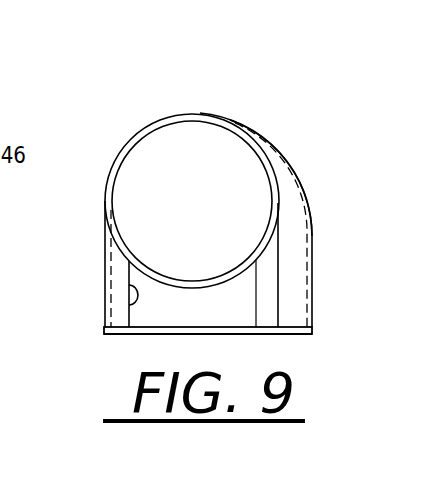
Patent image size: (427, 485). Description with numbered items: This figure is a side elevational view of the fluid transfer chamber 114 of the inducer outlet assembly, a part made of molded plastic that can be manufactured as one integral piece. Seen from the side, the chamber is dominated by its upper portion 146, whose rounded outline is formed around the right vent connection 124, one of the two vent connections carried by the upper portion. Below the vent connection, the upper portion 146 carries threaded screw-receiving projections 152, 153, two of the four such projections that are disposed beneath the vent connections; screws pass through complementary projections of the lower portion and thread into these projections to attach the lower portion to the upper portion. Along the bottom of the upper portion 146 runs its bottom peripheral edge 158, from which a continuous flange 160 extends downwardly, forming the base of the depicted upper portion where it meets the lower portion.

The fluid transfer chamber 114 is at (242, 120).
The right vent connection 124 is at (270, 158).
The upper portion 146 is at (303, 173).
The threaded screw-receiving projection 152 is at (128, 286).
The threaded screw-receiving projection 153 is at (279, 272).
The bottom peripheral edge 158 is at (104, 330).
The continuous flange 160 is at (287, 335).